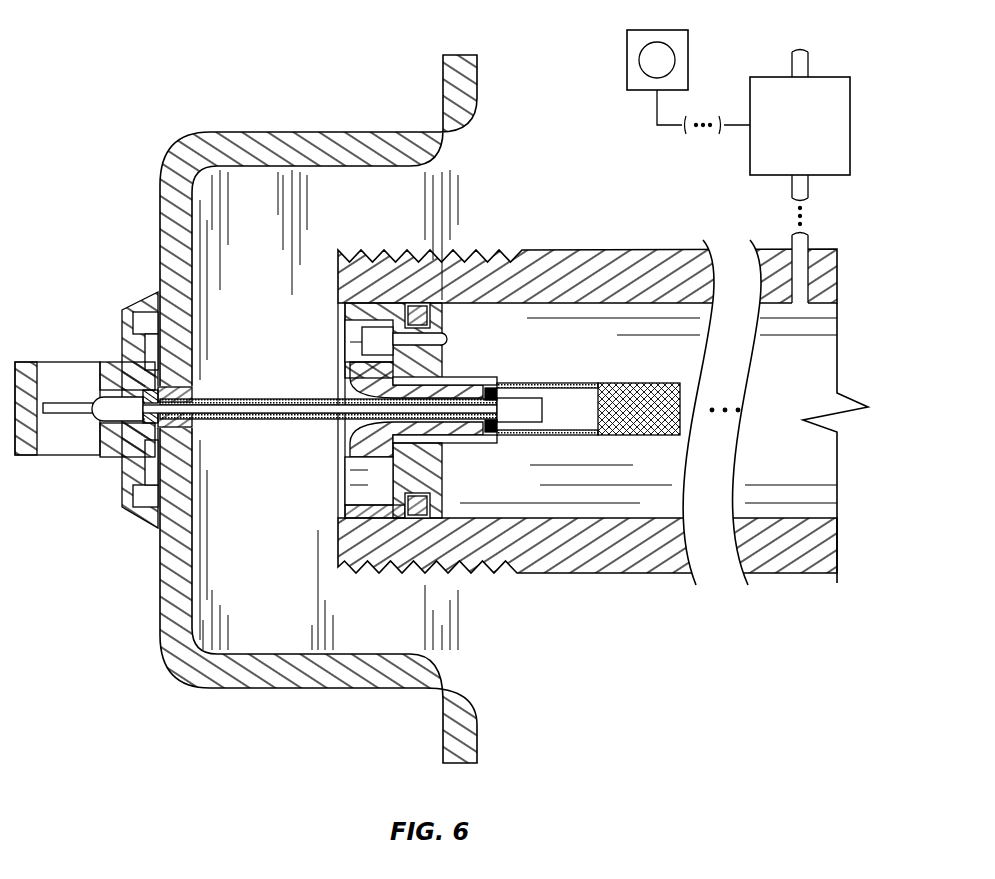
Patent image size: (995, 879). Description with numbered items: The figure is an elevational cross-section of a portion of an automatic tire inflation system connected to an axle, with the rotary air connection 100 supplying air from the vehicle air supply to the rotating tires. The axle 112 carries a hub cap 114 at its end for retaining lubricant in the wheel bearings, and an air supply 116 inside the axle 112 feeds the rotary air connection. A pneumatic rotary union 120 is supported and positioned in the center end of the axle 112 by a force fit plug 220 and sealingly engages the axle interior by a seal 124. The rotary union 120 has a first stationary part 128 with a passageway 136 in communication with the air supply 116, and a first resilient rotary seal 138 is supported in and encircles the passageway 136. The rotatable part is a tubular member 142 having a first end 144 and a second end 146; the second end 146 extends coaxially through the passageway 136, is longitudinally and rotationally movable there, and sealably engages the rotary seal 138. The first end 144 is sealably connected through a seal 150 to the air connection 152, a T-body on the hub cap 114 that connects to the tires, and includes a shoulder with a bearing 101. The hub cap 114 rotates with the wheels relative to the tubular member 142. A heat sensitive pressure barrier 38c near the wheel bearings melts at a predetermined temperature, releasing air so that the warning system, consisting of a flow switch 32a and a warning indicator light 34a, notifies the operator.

The hub cap 114 is at (226, 131).
The rotary air connection 100 is at (603, 408).
The axle 112 is at (641, 563).
The pneumatic rotary union 120 is at (377, 429).
The heat sensitive pressure barrier 38c is at (442, 340).
The passageway 136 is at (348, 430).
The first stationary part 128 is at (348, 470).
The force fit plug 220 is at (437, 480).
The seal 124 is at (440, 505).
The first end 144 is at (213, 398).
The tubular member 142 is at (264, 407).
The second end 146 is at (516, 405).
The first resilient rotary seal 138 is at (495, 387).
The air supply 116 is at (642, 372).
The bearing 101 is at (141, 405).
The seal 150 is at (192, 438).
The air connection 152 is at (33, 458).
The flow switch 32a is at (822, 75).
The warning indicator light 34a is at (674, 30).